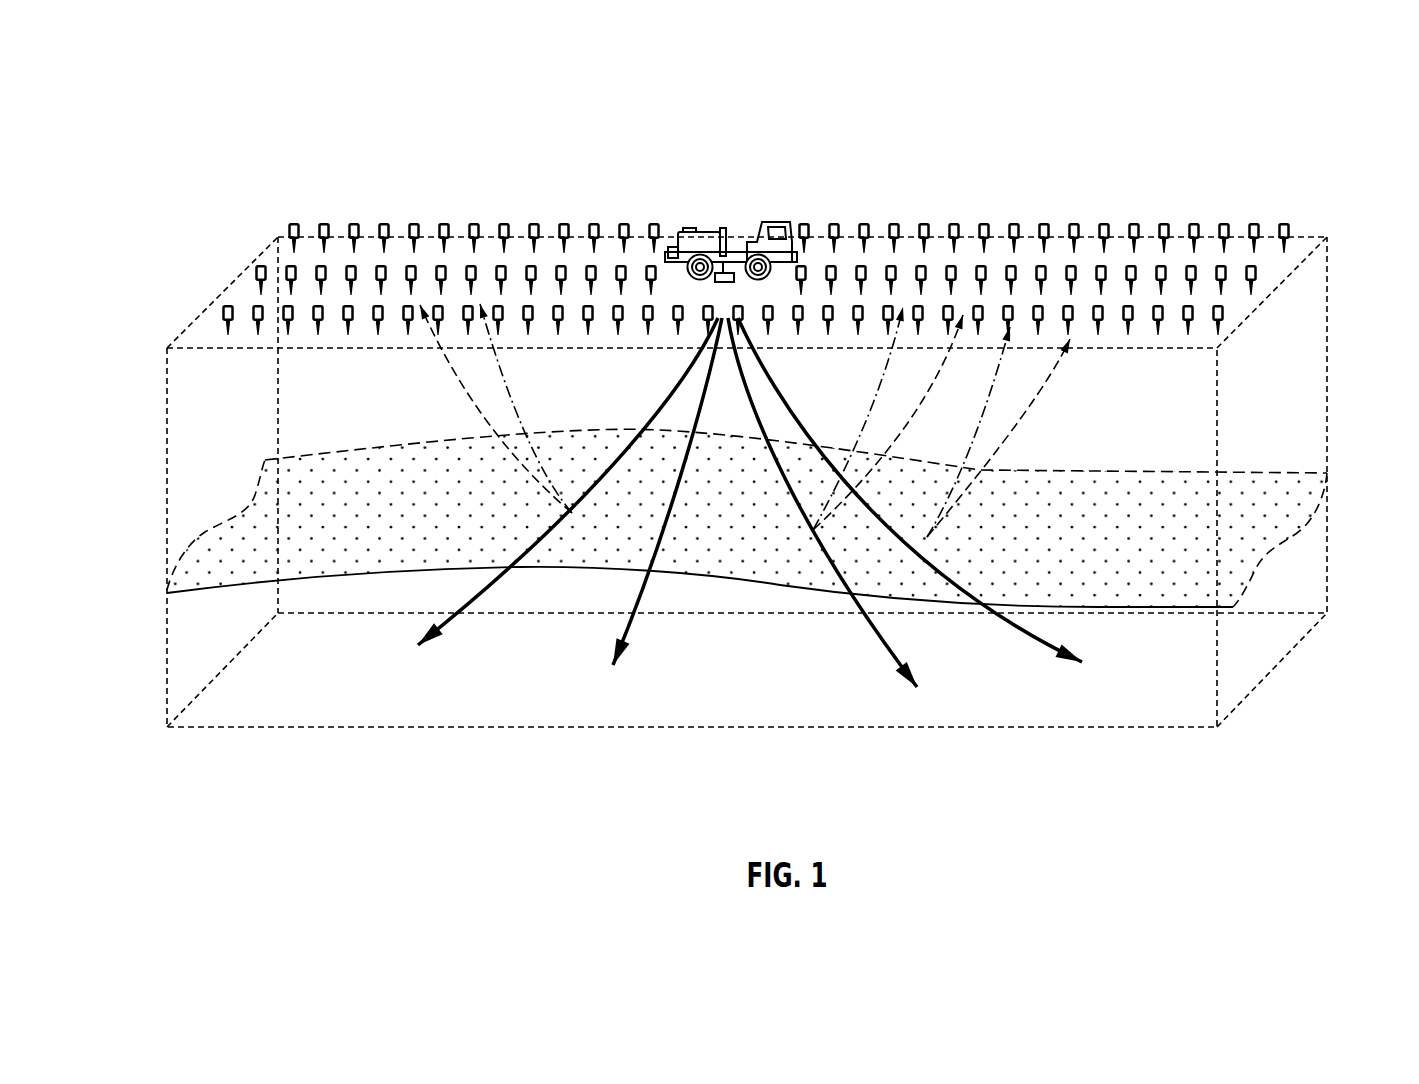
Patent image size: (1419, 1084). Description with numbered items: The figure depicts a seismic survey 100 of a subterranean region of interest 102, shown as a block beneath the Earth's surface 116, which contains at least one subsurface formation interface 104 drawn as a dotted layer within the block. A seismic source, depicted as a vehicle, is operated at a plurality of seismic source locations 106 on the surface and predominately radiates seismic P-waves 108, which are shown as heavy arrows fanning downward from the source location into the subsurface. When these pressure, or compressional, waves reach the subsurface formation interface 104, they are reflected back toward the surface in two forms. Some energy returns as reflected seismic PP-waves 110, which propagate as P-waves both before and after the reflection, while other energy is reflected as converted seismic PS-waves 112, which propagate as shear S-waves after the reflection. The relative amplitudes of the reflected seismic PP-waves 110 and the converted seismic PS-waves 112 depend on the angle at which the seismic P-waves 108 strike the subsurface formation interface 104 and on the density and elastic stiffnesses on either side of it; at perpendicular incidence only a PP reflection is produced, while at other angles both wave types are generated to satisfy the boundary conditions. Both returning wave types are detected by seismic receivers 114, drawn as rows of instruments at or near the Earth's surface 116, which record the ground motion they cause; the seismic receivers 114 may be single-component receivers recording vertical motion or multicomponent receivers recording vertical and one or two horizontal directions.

The seismic survey 100 is at (1332, 143).
The subterranean region of interest 102 is at (1155, 695).
The subsurface formation interface 104 is at (265, 460).
The seismic source locations 106 is at (702, 228).
The seismic P-waves 108 is at (457, 618).
The reflected seismic PP-waves 110 is at (450, 370).
The converted seismic PS-waves 112 is at (507, 397).
The seismic receivers 114 is at (1195, 223).
The Earth's surface 116 is at (238, 280).